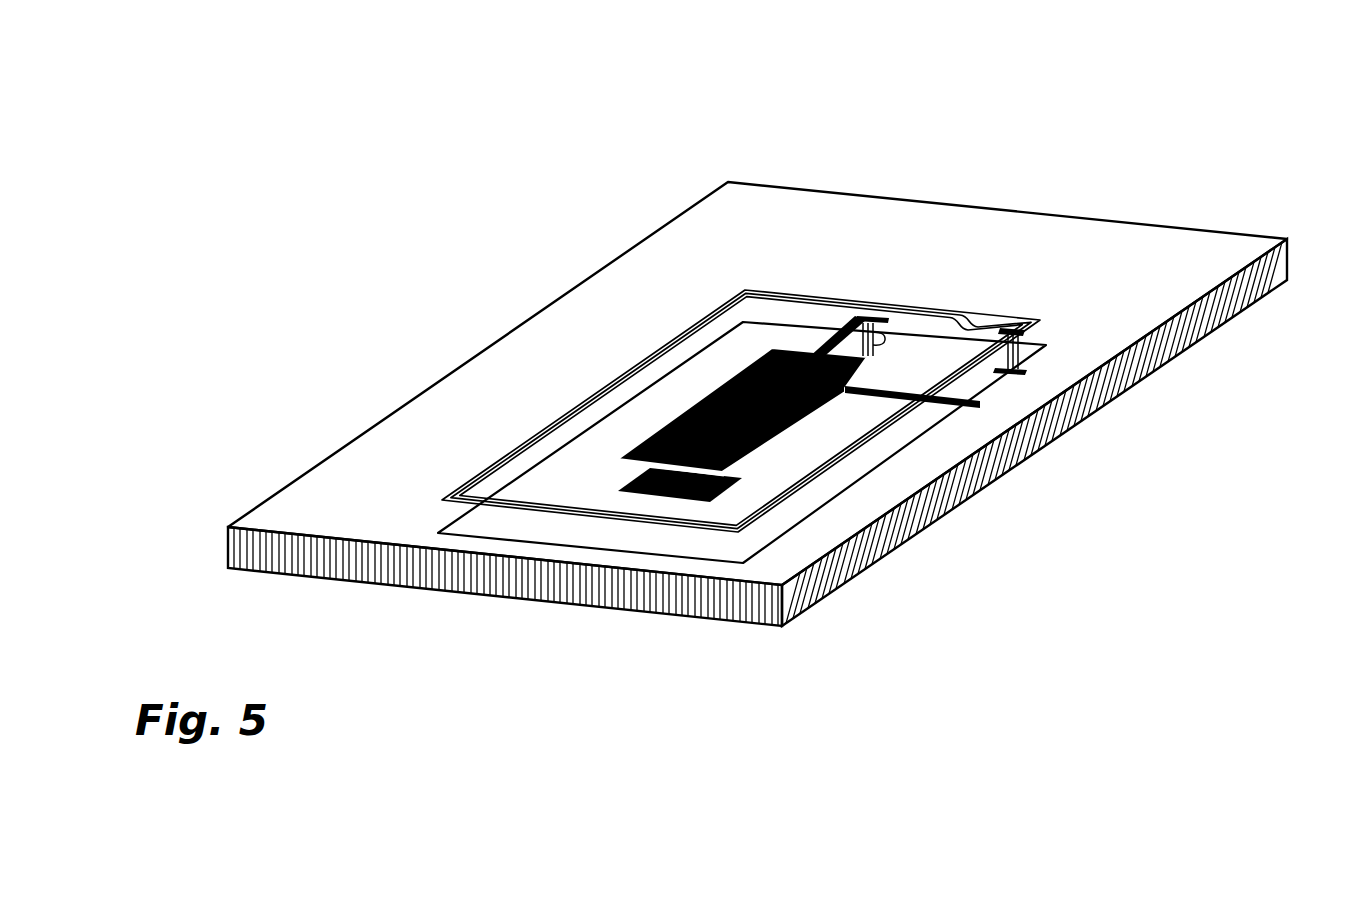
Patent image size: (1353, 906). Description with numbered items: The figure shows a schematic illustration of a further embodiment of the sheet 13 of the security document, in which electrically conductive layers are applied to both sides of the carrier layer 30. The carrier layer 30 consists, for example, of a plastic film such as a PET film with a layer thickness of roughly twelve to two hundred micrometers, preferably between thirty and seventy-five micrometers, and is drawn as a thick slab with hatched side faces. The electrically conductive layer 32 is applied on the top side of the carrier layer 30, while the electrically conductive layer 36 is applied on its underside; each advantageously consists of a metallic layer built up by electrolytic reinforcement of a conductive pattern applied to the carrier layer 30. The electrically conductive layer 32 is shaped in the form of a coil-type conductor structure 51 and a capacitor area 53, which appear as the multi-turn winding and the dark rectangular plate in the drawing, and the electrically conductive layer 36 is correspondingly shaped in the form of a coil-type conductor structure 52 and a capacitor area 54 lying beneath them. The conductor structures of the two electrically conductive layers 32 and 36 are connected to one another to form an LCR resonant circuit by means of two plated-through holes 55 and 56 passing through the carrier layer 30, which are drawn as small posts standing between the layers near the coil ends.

The sheet 13 is at (1138, 120).
The carrier layer 30 is at (1287, 238).
The electrically conductive layer 32 is at (570, 390).
The electrically conductive layer 36 is at (583, 553).
The coil-type conductor structure 51 is at (887, 295).
The coil-type conductor structure 52 is at (697, 317).
The capacitor area 53 is at (720, 383).
The capacitor area 54 is at (667, 522).
The plated-through hole 55 is at (1023, 355).
The plated-through hole 56 is at (858, 316).